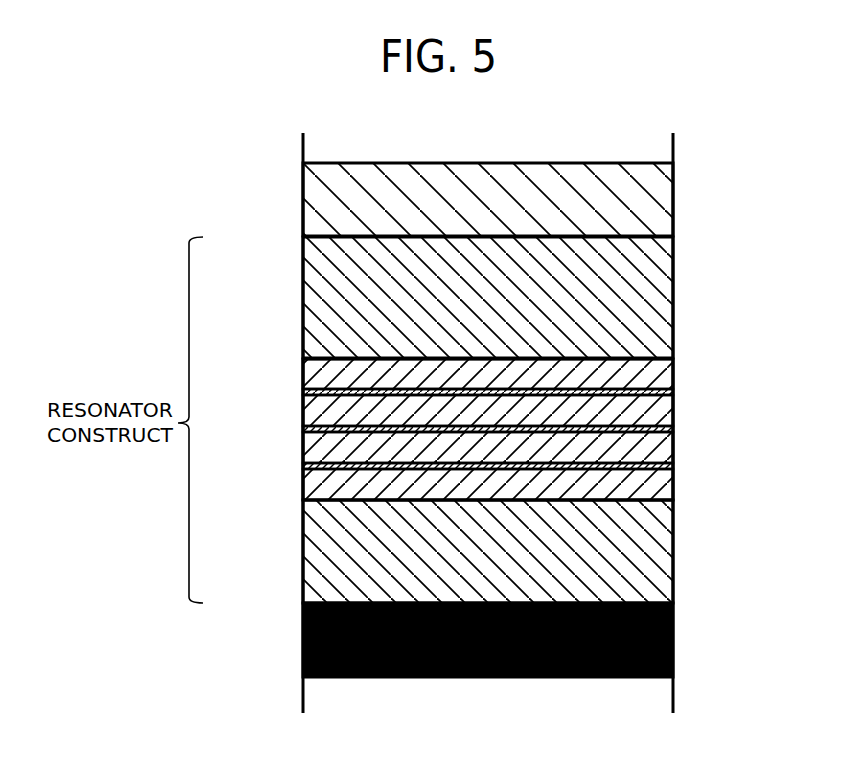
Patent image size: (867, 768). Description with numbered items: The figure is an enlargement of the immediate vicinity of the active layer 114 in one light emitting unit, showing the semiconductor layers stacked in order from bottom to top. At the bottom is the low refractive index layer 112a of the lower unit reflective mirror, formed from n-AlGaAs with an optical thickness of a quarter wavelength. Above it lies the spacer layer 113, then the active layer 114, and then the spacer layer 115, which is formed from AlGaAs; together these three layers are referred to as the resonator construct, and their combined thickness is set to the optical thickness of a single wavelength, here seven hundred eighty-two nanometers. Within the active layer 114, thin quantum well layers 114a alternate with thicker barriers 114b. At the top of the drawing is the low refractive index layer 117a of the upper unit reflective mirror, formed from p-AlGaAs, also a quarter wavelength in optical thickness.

The low refractive index layer 117a is at (665, 205).
The spacer layer 115 is at (665, 302).
The active layer 114 is at (521, 427).
The quantum well layer 114a is at (303, 392).
The barrier 114b is at (665, 378).
The spacer layer 113 is at (665, 565).
The low refractive index layer 112a is at (665, 648).